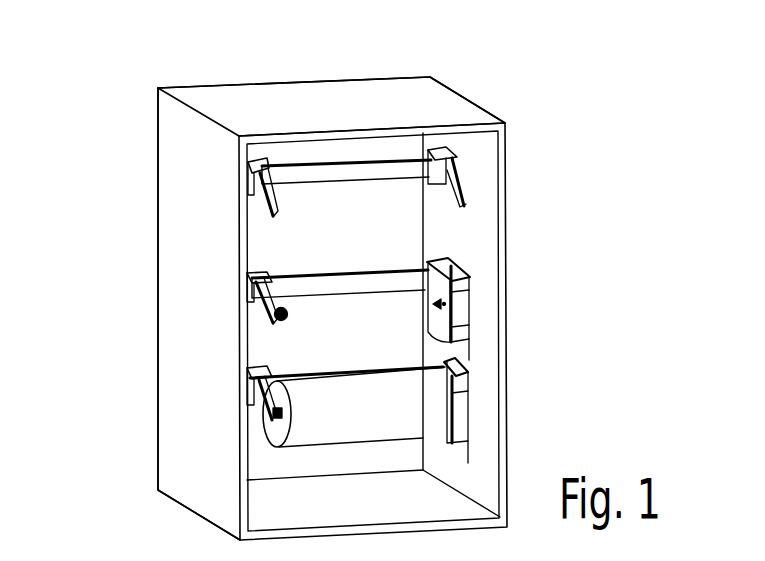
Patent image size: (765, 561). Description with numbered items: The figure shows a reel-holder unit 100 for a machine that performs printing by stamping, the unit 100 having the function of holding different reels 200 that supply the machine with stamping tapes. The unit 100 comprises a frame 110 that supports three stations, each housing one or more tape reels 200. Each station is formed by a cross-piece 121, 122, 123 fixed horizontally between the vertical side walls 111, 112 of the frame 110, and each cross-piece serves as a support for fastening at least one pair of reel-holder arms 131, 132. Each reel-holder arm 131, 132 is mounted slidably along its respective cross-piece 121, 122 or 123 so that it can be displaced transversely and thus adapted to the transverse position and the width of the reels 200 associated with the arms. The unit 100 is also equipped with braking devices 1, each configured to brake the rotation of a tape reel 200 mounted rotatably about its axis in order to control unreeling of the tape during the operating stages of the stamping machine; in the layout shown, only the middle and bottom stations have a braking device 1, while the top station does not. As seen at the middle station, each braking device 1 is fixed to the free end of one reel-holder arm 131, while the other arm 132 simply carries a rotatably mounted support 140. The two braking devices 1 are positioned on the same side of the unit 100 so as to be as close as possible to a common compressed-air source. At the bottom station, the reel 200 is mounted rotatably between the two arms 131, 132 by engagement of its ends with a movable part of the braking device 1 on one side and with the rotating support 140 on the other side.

The reel-holder unit 100 is at (150, 99).
The frame 110 is at (410, 103).
The vertical side wall 111 is at (468, 233).
The vertical side wall 112 is at (200, 438).
The cross-piece 121 is at (305, 164).
The cross-piece 122 is at (318, 275).
The cross-piece 123 is at (313, 382).
The reel-holder arm 131 is at (468, 204).
The reel-holder arm 132 is at (262, 208).
The rotatably mounted support 140 is at (287, 312).
The braking device 1 is at (464, 309).
The tape reel 200 is at (373, 410).